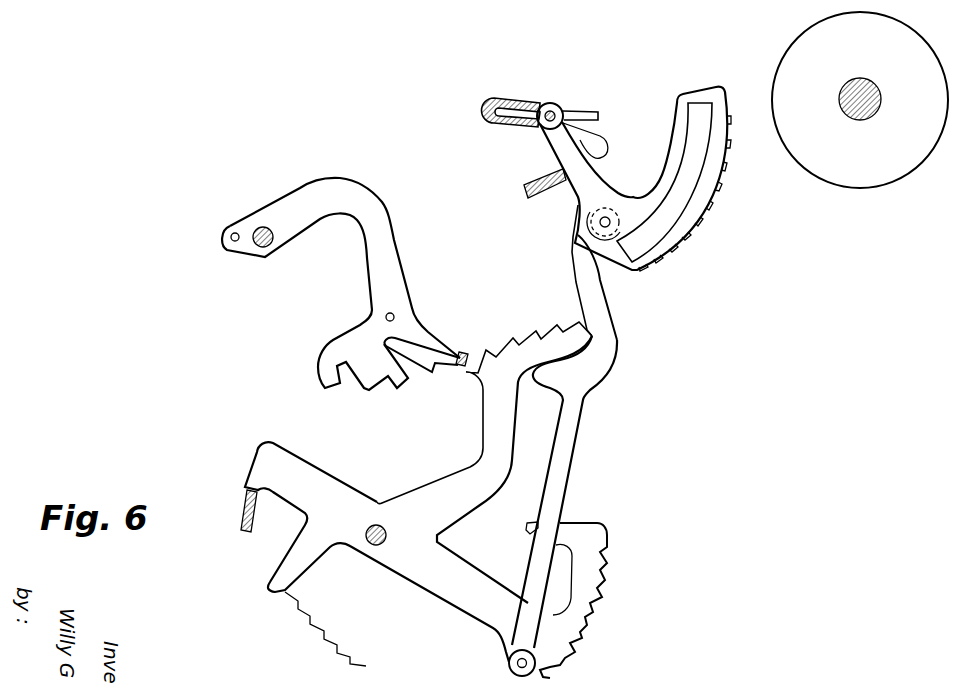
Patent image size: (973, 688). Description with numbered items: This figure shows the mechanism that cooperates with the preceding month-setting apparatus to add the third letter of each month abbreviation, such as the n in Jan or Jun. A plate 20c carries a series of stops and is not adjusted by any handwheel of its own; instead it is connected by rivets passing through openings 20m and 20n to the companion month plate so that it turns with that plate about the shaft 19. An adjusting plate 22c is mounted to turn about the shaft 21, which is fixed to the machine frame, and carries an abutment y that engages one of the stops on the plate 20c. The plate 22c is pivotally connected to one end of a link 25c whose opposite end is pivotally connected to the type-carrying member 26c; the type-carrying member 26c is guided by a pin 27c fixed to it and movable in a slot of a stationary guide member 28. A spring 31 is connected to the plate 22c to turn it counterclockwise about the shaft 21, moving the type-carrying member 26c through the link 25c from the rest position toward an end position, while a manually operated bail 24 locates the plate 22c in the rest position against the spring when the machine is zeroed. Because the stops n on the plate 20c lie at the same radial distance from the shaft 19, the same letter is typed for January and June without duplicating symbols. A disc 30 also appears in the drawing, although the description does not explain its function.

The shaft 19 is at (263, 247).
The plate 20c is at (387, 253).
The opening 20m is at (233, 242).
The opening 20n is at (394, 317).
The shaft 21 is at (372, 545).
The plate 22c is at (427, 495).
The bail 24 is at (247, 498).
The link 25c is at (562, 473).
The type-carrying member 26c is at (670, 145).
The pin 27c is at (552, 112).
The stationary guide member 28 is at (501, 100).
The disc 30 is at (860, 177).
The spring 31 is at (332, 632).